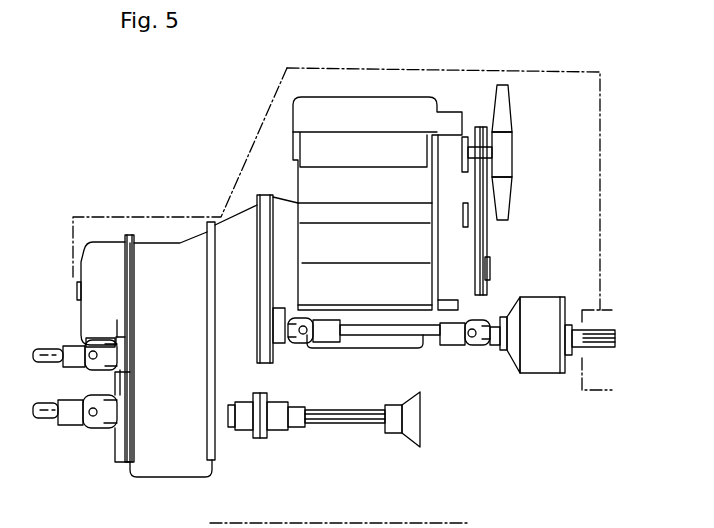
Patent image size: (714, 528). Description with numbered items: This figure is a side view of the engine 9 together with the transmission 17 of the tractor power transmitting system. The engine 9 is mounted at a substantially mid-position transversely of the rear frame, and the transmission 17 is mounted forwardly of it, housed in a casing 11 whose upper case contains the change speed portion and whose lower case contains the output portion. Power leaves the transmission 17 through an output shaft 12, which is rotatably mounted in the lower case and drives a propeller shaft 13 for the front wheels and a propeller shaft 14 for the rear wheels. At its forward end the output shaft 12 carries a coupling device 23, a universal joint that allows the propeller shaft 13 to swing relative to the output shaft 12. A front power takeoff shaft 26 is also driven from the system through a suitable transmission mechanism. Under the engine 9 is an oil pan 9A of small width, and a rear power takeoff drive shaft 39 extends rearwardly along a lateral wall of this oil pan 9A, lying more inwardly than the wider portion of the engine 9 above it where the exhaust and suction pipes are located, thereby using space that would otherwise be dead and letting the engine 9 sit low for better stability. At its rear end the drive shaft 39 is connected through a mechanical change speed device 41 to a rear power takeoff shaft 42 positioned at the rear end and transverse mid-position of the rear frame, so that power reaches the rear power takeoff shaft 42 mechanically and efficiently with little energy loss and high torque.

The engine 9 is at (408, 97).
The oil pan 9A is at (383, 350).
The casing 11 is at (192, 237).
The output shaft 12 is at (232, 427).
The propeller shaft 13 is at (47, 418).
The propeller shaft 14 is at (327, 408).
The transmission 17 is at (133, 225).
The coupling device 23 is at (105, 430).
The front power takeoff shaft 26 is at (113, 345).
The rear power takeoff drive shaft 39 is at (437, 342).
The mechanical change speed device 41 is at (545, 296).
The rear power takeoff shaft 42 is at (603, 347).